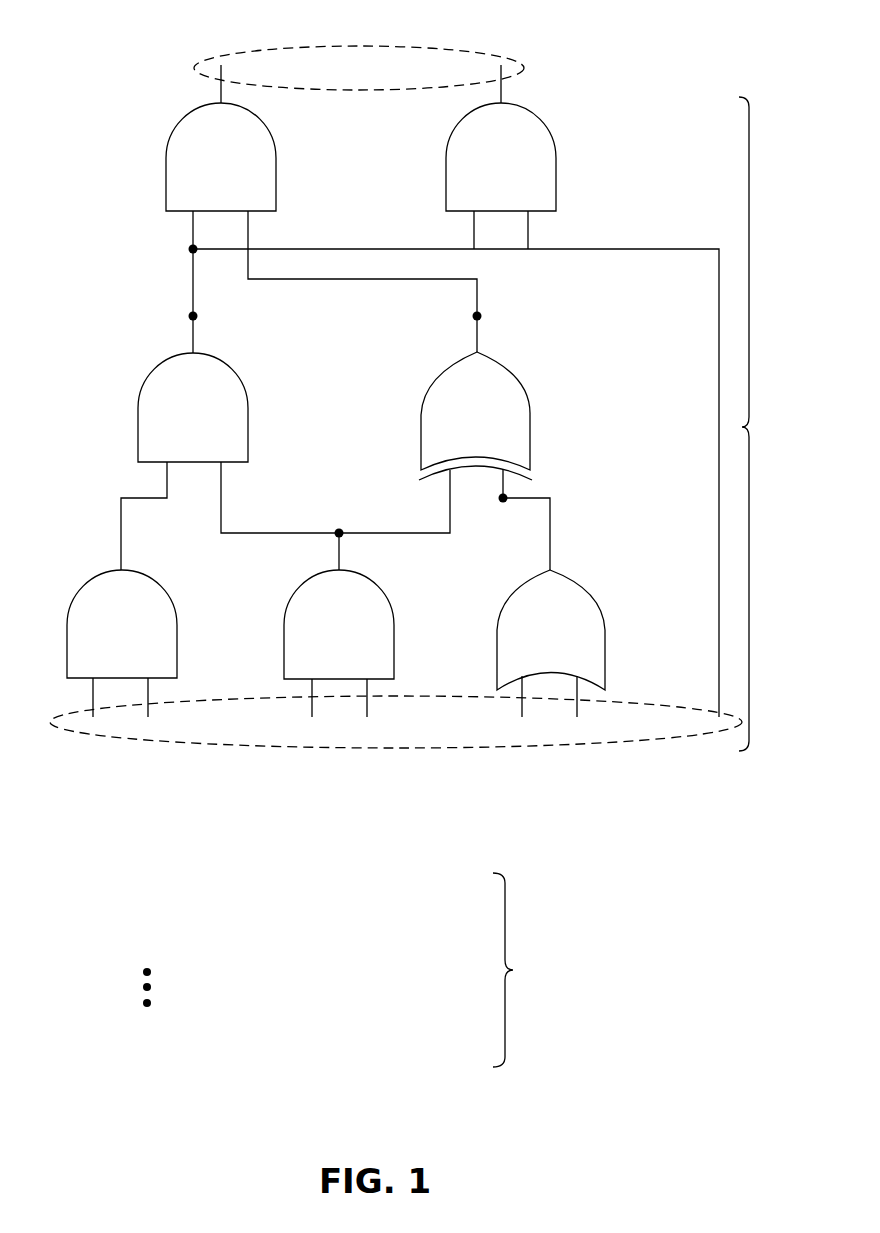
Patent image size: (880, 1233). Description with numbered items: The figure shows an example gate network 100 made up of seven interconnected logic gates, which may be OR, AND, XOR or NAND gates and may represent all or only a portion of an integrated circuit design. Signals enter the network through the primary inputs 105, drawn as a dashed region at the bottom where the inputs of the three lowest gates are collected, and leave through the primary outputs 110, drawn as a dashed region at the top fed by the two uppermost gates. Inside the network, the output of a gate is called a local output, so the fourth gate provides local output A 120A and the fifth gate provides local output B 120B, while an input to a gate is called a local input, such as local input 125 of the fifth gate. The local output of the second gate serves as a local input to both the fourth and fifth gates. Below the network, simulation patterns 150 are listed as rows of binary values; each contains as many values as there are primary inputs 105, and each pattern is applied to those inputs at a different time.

The gate network 100 is at (458, 408).
The primary outputs 110 is at (458, 48).
The primary inputs 105 is at (518, 738).
The local output A 120A is at (176, 316).
The local output B 120B is at (492, 315).
The local input 125 is at (523, 491).
The simulation patterns 150 is at (382, 970).